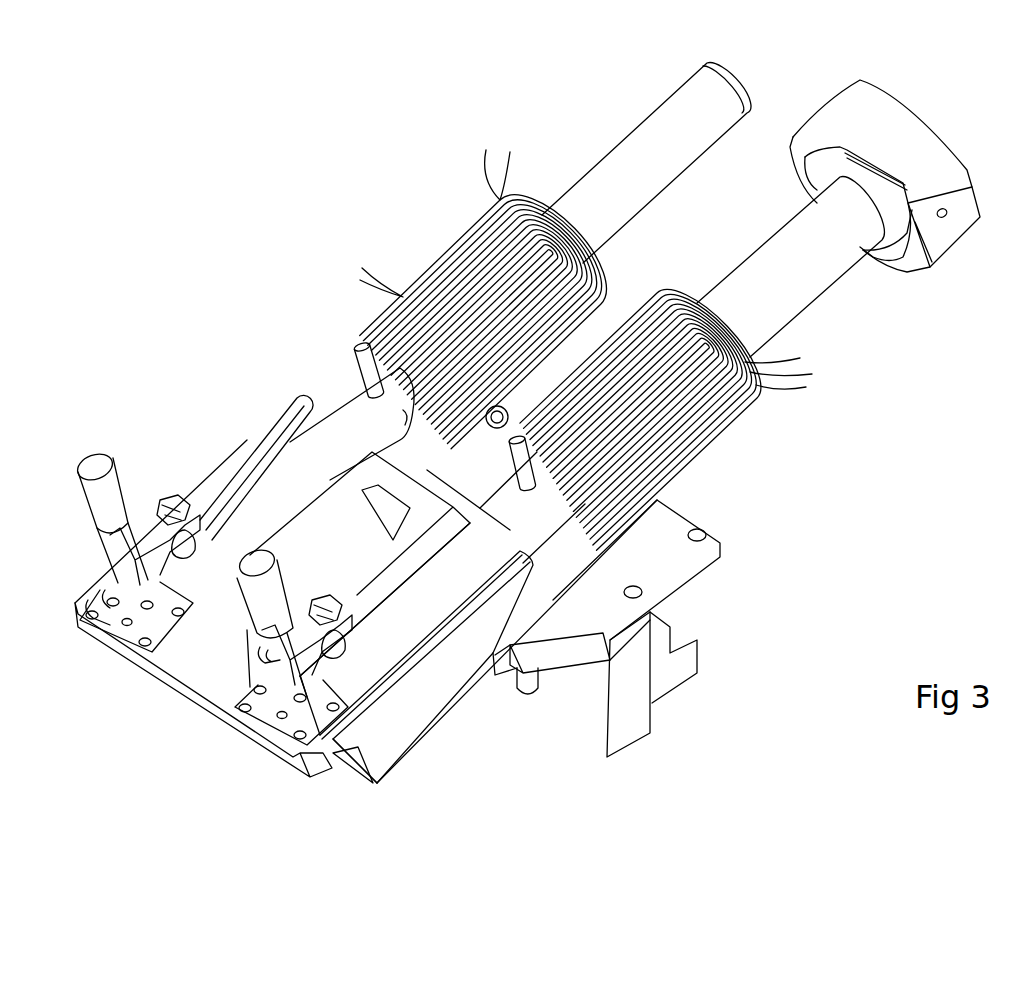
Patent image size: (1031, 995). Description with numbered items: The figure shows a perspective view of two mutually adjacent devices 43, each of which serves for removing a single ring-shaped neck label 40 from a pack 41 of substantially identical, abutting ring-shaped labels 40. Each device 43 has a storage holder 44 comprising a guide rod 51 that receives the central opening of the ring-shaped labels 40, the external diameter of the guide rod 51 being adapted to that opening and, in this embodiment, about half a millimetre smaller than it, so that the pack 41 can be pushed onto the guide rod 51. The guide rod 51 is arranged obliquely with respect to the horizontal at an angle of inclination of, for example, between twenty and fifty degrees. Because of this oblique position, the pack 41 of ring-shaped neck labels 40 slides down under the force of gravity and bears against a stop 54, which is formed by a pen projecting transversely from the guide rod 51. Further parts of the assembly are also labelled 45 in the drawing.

The ring-shaped neck label 40 is at (593, 256).
The pack of ring-shaped labels 41 is at (418, 260).
The device for removing a single ring-shaped label 43 is at (338, 158).
The storage holder 44 is at (620, 124).
The mandrel rod 45 is at (736, 298).
The guide rod 51 is at (656, 148).
The stop 54 is at (366, 372).